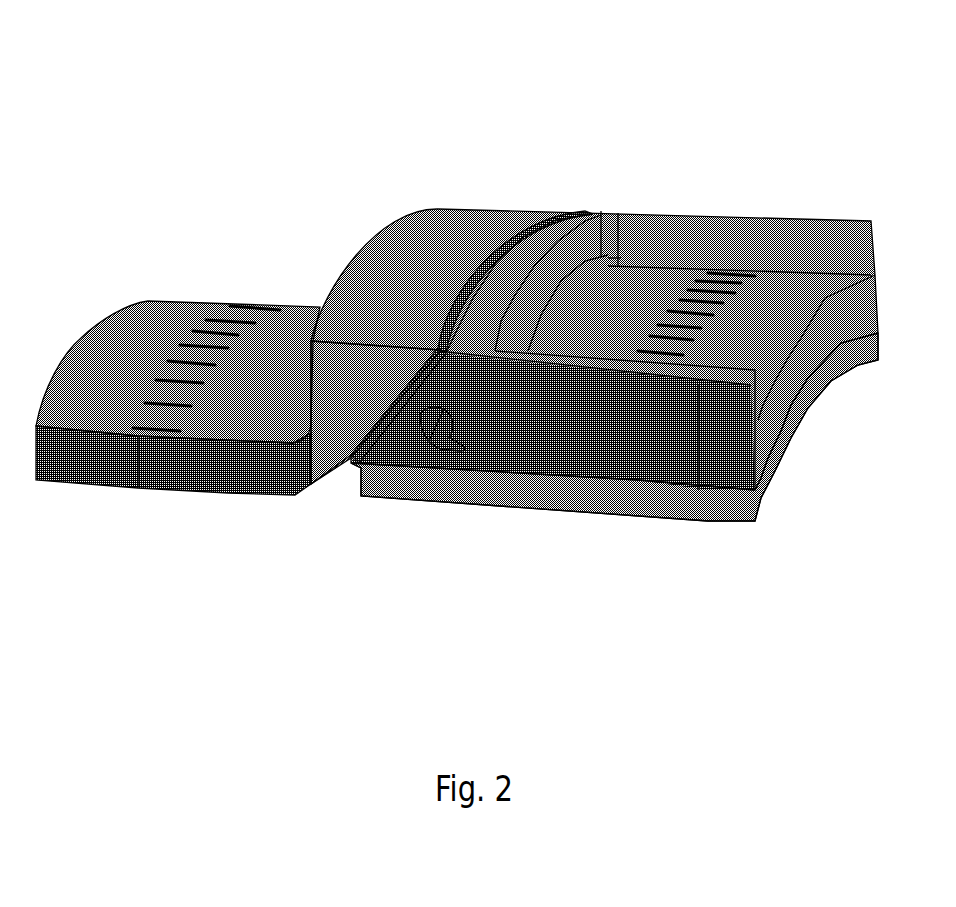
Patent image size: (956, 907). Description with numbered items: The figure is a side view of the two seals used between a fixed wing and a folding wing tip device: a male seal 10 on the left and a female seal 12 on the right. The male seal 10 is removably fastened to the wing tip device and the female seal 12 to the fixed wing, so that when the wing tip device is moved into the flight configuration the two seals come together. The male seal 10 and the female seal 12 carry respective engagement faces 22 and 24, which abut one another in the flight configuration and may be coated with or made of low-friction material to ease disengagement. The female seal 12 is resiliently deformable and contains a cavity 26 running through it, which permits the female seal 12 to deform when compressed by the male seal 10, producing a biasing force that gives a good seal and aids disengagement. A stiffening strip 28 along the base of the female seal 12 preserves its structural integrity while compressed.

The male seal 10 is at (167, 307).
The female seal 12 is at (538, 208).
The engagement face 22 is at (380, 387).
The engagement face 24 is at (370, 440).
The cavity 26 is at (445, 447).
The stiffening strip 28 is at (638, 500).